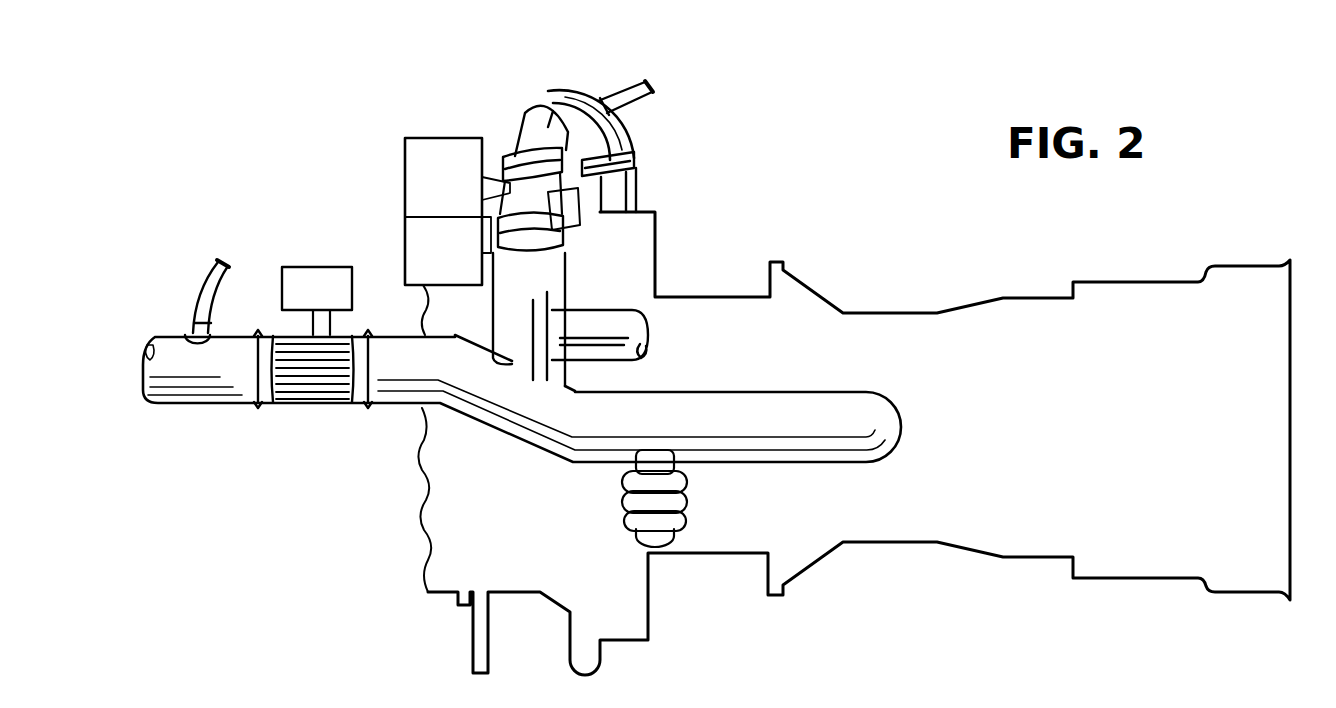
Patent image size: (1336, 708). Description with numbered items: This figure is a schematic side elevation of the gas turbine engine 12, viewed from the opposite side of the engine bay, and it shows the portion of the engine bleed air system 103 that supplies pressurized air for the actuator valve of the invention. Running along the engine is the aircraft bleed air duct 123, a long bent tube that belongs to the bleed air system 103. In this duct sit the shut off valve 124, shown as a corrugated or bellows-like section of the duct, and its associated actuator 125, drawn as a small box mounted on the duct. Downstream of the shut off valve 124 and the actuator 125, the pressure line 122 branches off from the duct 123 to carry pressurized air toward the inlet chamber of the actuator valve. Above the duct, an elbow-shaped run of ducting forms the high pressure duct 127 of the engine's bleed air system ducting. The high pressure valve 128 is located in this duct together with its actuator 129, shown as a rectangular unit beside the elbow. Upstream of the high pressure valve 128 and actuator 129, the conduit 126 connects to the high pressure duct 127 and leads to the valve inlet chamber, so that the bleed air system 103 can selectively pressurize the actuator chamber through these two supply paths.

The engine 12 is at (913, 316).
The engine bleed air system 103 is at (548, 448).
The pressure line 122 is at (200, 290).
The aircraft bleed air duct 123 is at (410, 390).
The shut off valve 124 is at (297, 407).
The actuator 125 is at (317, 268).
The conduit 126 is at (648, 86).
The high pressure duct 127 is at (560, 90).
The high pressure valve 128 is at (533, 207).
The actuator 129 is at (424, 150).